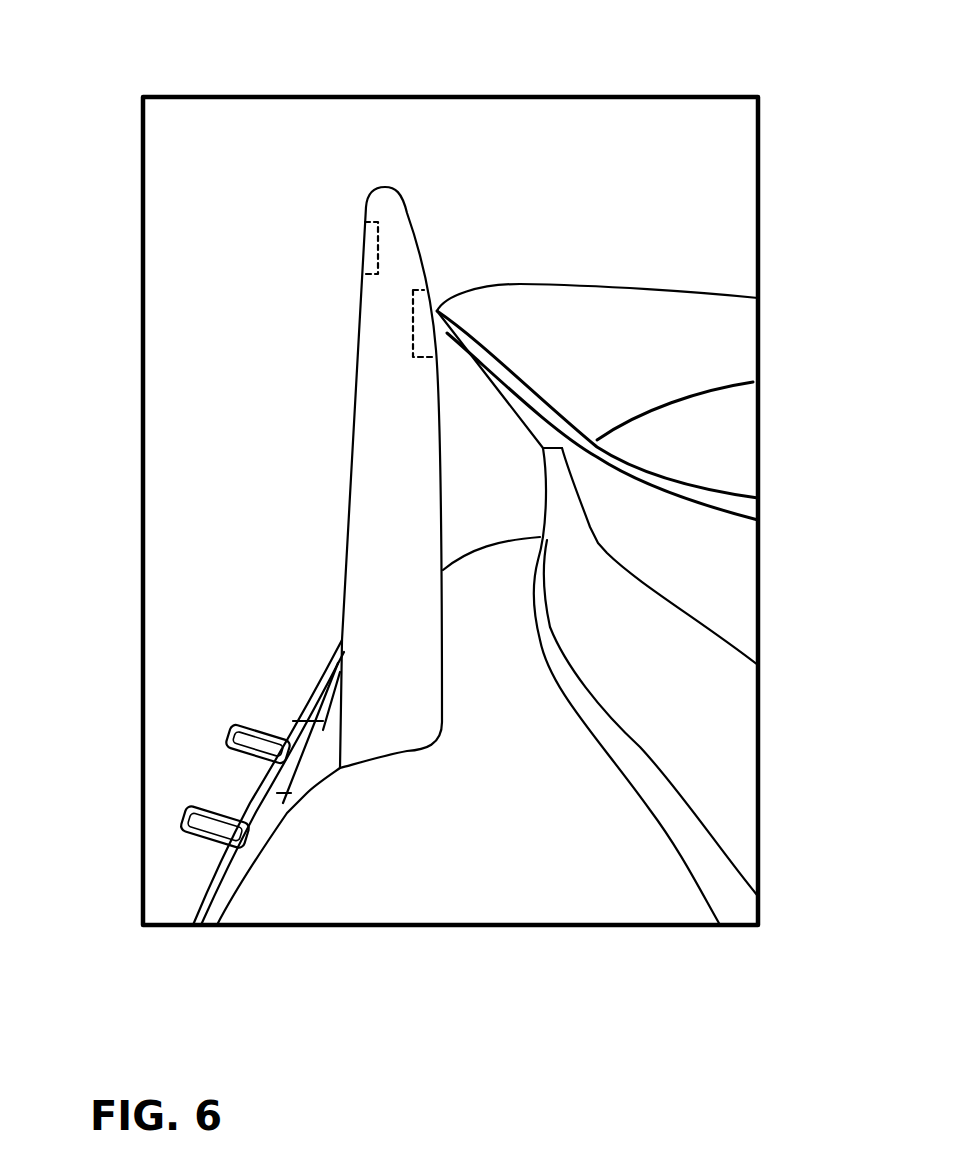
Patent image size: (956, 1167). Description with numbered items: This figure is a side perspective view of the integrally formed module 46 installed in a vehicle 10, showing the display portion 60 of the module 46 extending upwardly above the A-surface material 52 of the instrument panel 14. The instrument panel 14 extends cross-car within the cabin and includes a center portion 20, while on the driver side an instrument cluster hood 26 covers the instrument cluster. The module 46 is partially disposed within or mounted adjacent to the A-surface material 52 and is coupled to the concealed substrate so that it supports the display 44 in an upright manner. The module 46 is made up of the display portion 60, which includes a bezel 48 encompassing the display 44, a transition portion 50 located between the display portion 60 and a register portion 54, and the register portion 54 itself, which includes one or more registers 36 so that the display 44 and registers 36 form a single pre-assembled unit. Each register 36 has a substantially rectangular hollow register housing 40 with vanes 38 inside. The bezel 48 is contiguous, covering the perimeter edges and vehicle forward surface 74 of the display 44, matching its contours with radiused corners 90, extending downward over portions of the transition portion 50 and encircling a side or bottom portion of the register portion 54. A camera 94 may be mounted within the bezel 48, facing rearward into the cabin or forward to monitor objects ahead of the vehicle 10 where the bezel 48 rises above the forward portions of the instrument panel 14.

The vehicle 10 is at (300, 87).
The instrument panel 14 is at (555, 881).
The center portion 20 is at (195, 671).
The instrument cluster hood 26 is at (438, 310).
The registers 36 is at (221, 755).
The vanes 38 is at (255, 858).
The register housing 40 is at (289, 824).
The display 44 is at (355, 357).
The module 46 is at (439, 512).
The bezel 48 is at (407, 577).
The transition portion 50 is at (336, 763).
The A-surface material 52 is at (618, 887).
The register portion 54 is at (305, 675).
The display portion 60 is at (408, 404).
The vehicle forward surface 74 is at (441, 445).
The radiused corners 90 is at (391, 186).
The camera 94 is at (362, 222).